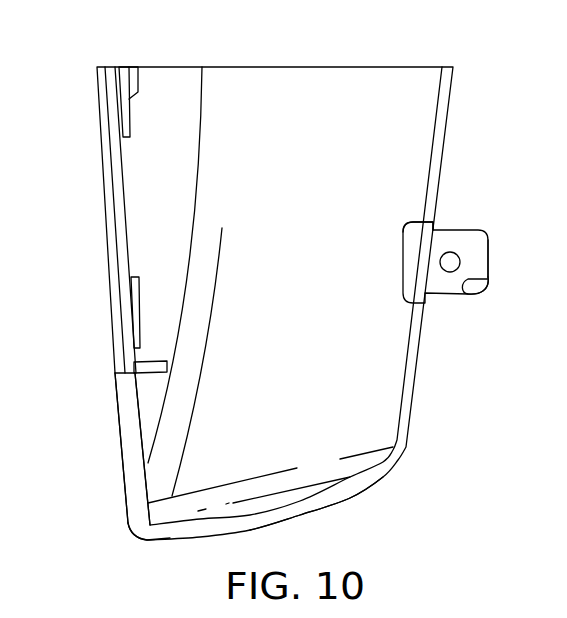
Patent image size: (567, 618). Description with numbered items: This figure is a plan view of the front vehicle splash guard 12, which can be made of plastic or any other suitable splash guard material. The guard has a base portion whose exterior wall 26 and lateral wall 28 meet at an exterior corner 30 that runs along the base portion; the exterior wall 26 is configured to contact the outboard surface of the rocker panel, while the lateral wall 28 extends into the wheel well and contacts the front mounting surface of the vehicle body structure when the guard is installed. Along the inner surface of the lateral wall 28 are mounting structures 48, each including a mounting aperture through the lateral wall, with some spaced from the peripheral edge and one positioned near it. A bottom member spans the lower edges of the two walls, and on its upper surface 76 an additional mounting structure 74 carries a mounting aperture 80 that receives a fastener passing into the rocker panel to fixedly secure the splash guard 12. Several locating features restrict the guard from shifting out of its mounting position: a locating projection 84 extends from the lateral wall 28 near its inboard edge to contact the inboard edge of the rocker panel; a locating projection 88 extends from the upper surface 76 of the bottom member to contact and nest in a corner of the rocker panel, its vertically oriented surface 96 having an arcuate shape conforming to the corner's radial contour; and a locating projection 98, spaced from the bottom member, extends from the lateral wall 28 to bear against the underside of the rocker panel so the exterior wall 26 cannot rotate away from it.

The front vehicle splash guard 12 is at (57, 185).
The exterior wall 26 is at (320, 505).
The lateral wall 28 is at (115, 403).
The exterior corner 30 is at (135, 535).
The mounting structure 48 is at (129, 116).
The additional mounting structure 74 is at (482, 232).
The upper surface 76 is at (422, 246).
The mounting aperture 80 is at (447, 264).
The locating projection 84 is at (167, 366).
The locating projection 88 is at (488, 281).
The vertically oriented surface 96 is at (477, 287).
The locating projection 98 is at (131, 80).